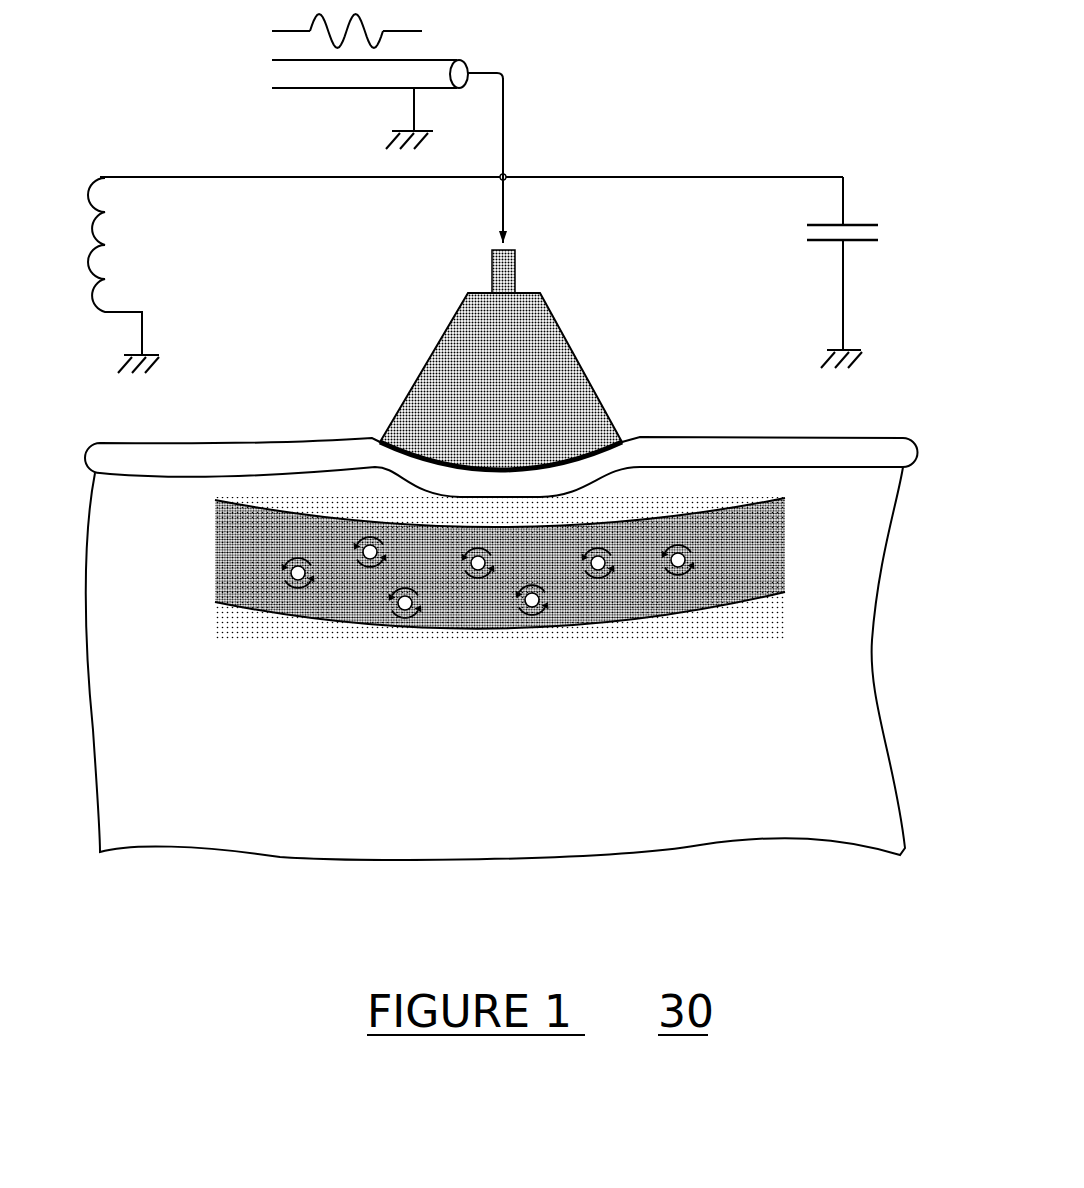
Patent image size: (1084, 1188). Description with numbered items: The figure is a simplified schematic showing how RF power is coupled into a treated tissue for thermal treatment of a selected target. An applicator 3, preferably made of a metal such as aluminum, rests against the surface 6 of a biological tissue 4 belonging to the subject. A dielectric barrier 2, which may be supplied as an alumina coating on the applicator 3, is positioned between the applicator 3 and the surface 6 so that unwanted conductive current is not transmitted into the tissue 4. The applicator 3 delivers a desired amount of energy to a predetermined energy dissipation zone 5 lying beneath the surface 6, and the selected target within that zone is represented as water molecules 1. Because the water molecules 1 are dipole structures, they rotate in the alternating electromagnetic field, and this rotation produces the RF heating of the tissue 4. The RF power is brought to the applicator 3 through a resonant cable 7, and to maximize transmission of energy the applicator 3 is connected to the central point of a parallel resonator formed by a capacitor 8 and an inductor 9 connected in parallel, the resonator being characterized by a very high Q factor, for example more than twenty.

The water molecules 1 is at (488, 664).
The dielectric barrier 2 is at (537, 408).
The applicator 3 is at (529, 342).
The biological tissue 4 is at (510, 615).
The energy dissipation zone 5 is at (582, 595).
The surface 6 is at (501, 393).
The resonant cable 7 is at (437, 74).
The capacitor 8 is at (863, 224).
The inductor 9 is at (144, 222).